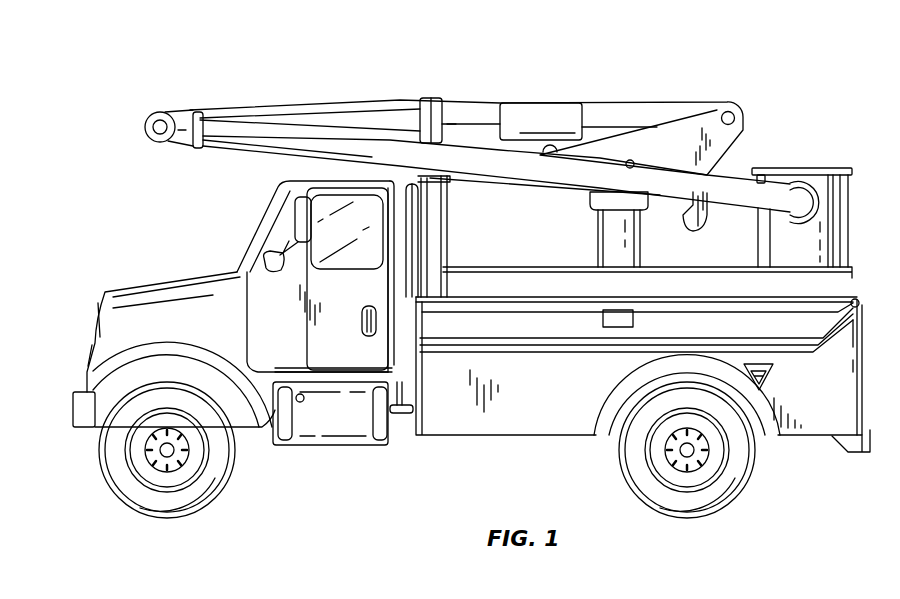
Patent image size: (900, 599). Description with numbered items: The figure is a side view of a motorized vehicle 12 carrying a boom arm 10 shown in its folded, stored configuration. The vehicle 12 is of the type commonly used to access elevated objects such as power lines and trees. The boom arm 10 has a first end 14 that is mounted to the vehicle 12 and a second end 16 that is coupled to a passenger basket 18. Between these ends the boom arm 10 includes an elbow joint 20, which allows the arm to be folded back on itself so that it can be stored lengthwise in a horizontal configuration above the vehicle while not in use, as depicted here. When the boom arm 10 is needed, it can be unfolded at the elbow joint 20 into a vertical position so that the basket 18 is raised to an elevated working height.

The boom arm 10 is at (302, 93).
The motorized vehicle 12 is at (366, 493).
The first end 14 is at (675, 138).
The second end 16 is at (729, 178).
The passenger basket 18 is at (847, 215).
The elbow joint 20 is at (153, 113).